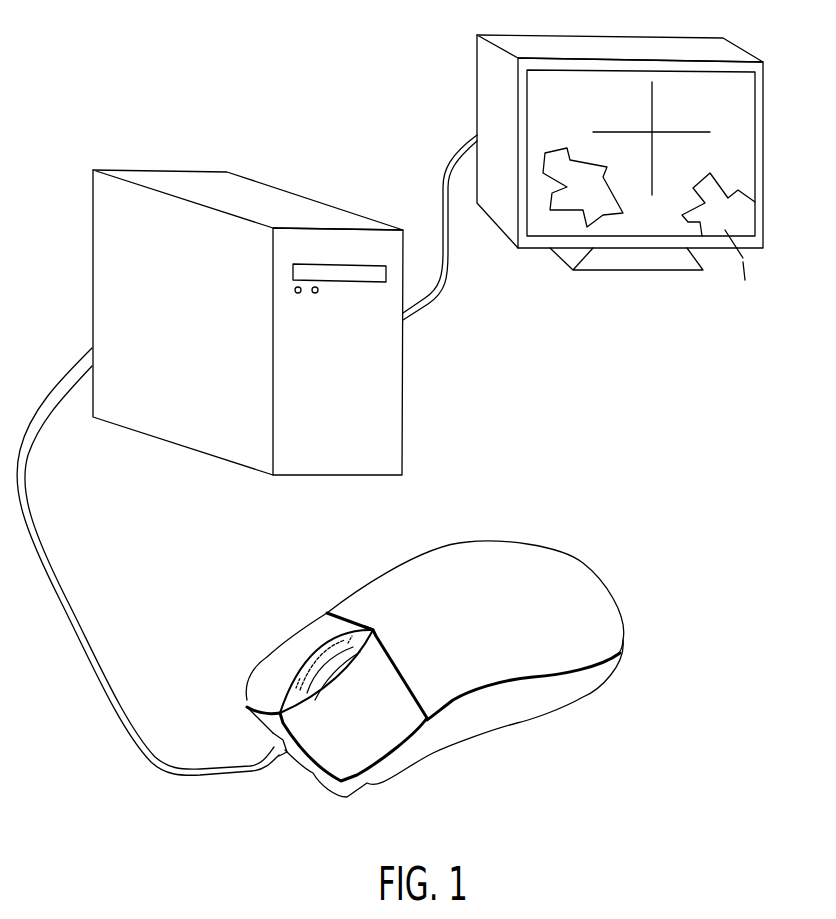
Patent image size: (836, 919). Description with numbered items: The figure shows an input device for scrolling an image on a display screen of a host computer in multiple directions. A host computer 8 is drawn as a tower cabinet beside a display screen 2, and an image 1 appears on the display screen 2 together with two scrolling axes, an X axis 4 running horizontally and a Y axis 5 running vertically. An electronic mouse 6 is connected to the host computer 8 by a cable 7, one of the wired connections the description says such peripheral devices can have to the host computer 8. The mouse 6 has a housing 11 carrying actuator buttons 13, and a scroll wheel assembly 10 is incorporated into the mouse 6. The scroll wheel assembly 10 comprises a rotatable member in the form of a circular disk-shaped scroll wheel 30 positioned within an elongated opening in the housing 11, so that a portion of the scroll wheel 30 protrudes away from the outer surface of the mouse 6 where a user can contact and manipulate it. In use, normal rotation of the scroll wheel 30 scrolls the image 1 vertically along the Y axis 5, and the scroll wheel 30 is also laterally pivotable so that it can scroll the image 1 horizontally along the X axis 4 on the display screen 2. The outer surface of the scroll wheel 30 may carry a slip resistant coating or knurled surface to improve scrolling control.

The image 1 is at (568, 151).
The display screen 2 is at (730, 80).
The X axis 4 is at (663, 134).
The Y axis 5 is at (653, 103).
The electronic mouse 6 is at (320, 593).
The cable connector 7 is at (395, 322).
The host computer 8 is at (406, 397).
The scroll wheel assembly 10 is at (308, 670).
The housing 11 is at (493, 550).
The actuator buttons 13 is at (257, 698).
The scroll wheel 30 is at (328, 674).